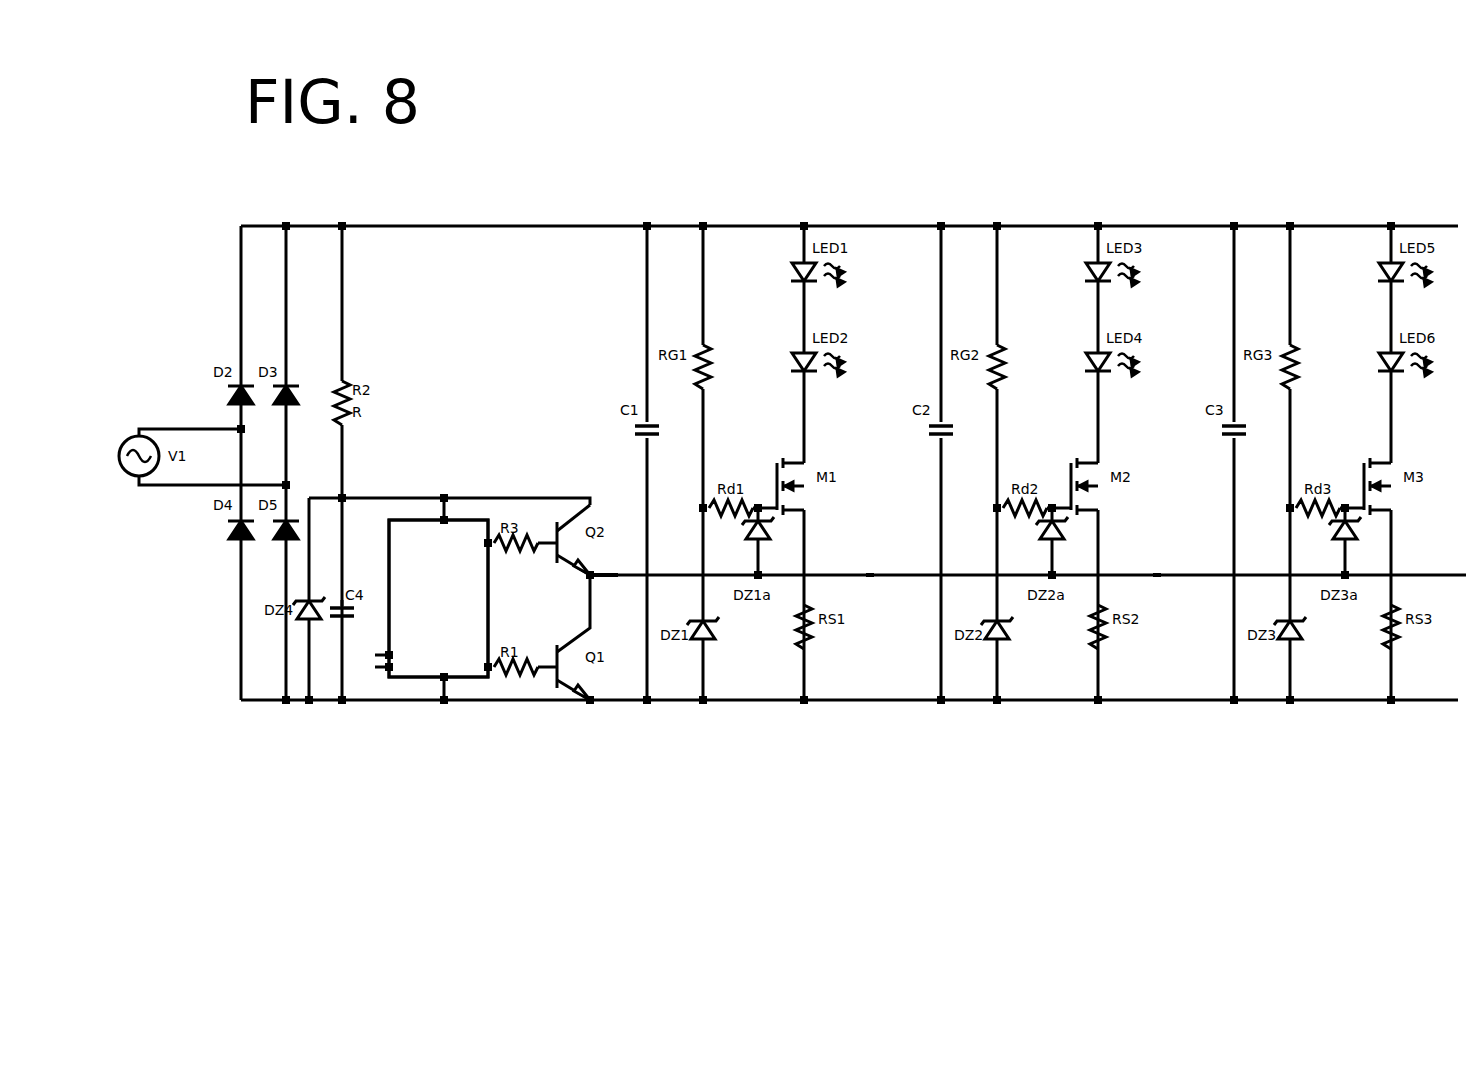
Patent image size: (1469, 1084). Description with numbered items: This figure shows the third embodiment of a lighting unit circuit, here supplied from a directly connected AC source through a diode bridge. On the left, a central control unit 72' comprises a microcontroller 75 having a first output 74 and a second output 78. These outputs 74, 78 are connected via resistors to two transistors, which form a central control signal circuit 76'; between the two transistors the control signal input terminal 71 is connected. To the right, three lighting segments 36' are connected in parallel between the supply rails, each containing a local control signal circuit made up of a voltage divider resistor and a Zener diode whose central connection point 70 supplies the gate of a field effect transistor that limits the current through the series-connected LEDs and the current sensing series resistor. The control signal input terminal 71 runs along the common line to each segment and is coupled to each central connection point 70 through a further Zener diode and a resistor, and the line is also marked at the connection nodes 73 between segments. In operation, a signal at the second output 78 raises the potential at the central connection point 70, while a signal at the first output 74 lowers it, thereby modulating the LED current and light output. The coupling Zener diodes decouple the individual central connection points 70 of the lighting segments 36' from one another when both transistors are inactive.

The lighting segment 36' is at (1033, 430).
The central connection point 70 is at (705, 505).
The control signal input terminal 71 is at (613, 575).
The channel connection node 73 is at (870, 578).
The first output 74 is at (488, 666).
The microcontroller 75 is at (438, 570).
The central control signal circuit 76' is at (531, 509).
The second output 78 is at (486, 543).
The central control unit 72' is at (497, 638).